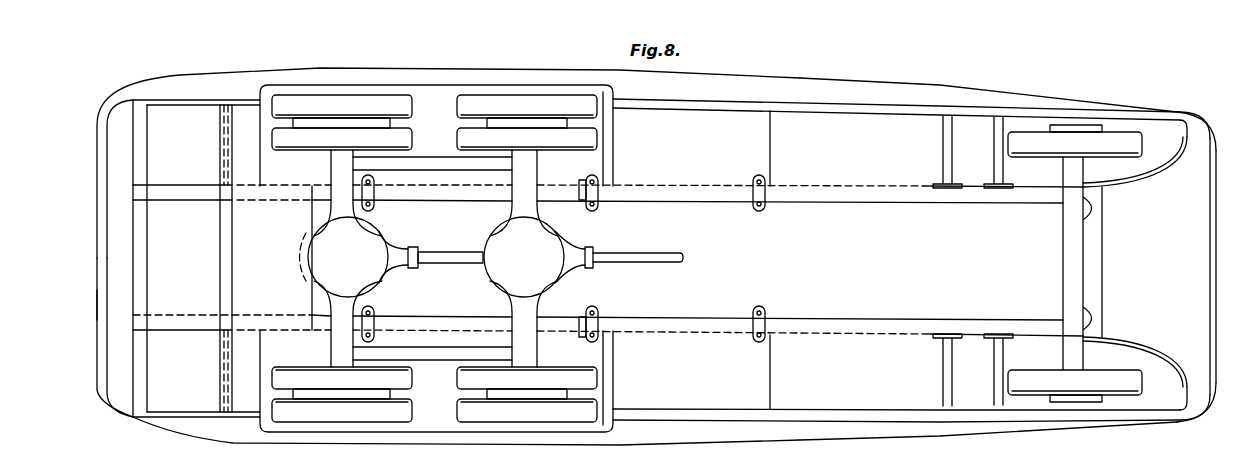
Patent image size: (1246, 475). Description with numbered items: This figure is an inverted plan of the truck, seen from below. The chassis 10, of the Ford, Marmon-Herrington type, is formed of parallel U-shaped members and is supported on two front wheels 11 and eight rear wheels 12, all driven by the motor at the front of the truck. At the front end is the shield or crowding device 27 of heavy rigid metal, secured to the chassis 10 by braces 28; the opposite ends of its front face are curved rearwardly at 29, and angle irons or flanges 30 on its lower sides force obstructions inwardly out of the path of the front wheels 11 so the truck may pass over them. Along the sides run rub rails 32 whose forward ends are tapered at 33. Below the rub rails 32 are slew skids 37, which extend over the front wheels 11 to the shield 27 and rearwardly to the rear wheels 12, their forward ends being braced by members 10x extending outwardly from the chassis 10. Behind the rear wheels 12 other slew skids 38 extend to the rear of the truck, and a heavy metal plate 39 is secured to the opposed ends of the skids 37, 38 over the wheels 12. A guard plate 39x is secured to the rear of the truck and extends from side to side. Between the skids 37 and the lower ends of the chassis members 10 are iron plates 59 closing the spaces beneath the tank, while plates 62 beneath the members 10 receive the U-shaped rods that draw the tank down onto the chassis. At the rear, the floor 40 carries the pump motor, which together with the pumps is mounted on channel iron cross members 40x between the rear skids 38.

The chassis 10 is at (823, 203).
The bracing members 10x is at (949, 172).
The front wheels 11 is at (1010, 142).
The rear wheels 12 is at (455, 141).
The shield or crowding device 27 is at (1213, 235).
The braces 28 is at (1032, 187).
The rearwardly curved ends 29 is at (1213, 126).
The angle irons or flanges 30 is at (1143, 180).
The rub rails 32 is at (742, 80).
The tapered ends 33 is at (846, 83).
The slew skids 37 is at (893, 102).
The rear slew skids 38 is at (197, 95).
The heavy metal plate 39 is at (605, 167).
The guard plate 39x is at (100, 298).
The floor 40 is at (305, 236).
The cross members 40x is at (146, 294).
The iron plates 59 is at (692, 186).
The plates 62 is at (376, 205).